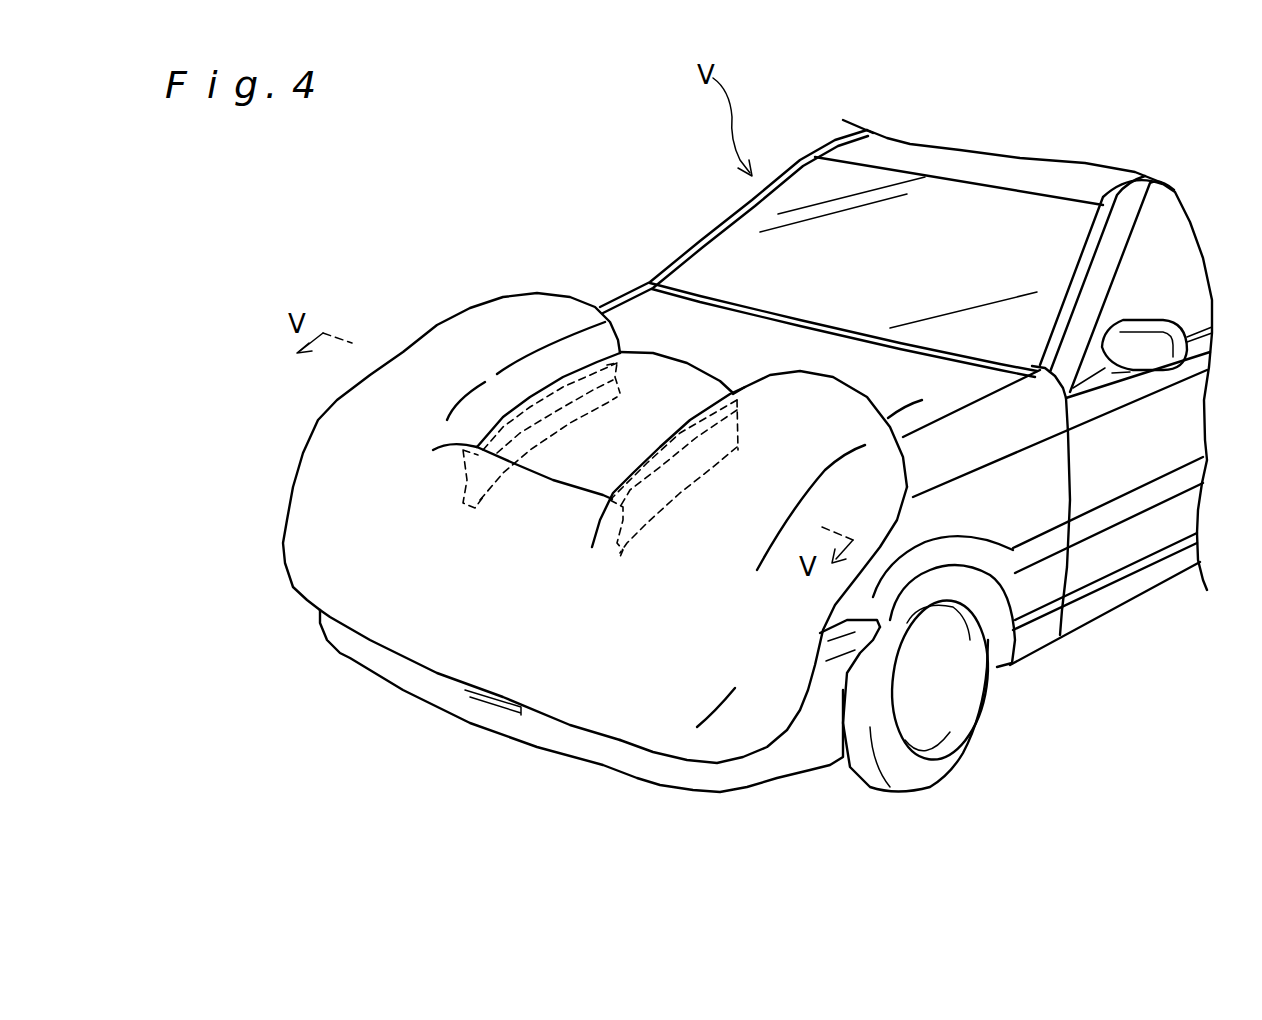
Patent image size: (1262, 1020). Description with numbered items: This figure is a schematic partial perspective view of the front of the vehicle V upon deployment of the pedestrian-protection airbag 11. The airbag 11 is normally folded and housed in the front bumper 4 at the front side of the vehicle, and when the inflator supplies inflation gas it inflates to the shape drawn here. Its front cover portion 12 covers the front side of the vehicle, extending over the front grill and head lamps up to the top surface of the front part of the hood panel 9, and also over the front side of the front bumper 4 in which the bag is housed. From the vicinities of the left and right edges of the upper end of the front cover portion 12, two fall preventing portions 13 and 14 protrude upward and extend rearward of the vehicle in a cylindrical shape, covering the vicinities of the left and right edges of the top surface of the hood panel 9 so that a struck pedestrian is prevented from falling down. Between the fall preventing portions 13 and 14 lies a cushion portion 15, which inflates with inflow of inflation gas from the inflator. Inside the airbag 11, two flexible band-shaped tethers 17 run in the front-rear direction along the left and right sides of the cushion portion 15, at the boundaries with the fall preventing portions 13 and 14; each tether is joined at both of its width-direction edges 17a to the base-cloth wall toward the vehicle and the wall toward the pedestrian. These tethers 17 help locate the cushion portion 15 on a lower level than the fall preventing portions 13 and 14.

The front bumper 4 is at (563, 737).
The hood panel 9 is at (670, 320).
The airbag 11 is at (273, 425).
The front cover portion 12 is at (470, 575).
The fall preventing portion 13 is at (830, 404).
The fall preventing portion 14 is at (445, 340).
The cushion portion 15 is at (687, 393).
The tether 17 is at (450, 490).
The edge 17a is at (557, 390).